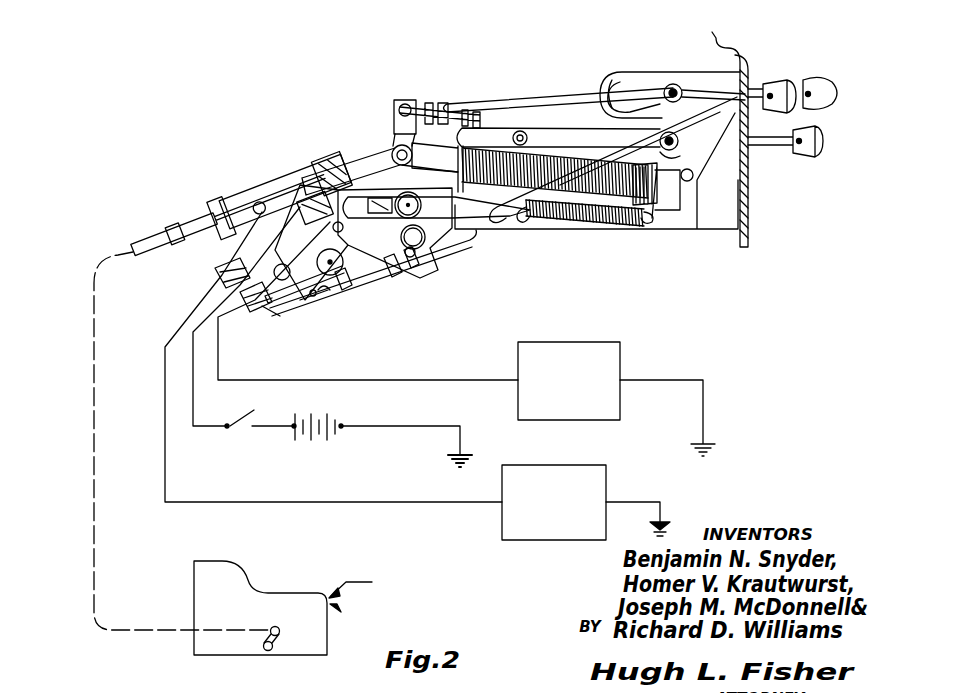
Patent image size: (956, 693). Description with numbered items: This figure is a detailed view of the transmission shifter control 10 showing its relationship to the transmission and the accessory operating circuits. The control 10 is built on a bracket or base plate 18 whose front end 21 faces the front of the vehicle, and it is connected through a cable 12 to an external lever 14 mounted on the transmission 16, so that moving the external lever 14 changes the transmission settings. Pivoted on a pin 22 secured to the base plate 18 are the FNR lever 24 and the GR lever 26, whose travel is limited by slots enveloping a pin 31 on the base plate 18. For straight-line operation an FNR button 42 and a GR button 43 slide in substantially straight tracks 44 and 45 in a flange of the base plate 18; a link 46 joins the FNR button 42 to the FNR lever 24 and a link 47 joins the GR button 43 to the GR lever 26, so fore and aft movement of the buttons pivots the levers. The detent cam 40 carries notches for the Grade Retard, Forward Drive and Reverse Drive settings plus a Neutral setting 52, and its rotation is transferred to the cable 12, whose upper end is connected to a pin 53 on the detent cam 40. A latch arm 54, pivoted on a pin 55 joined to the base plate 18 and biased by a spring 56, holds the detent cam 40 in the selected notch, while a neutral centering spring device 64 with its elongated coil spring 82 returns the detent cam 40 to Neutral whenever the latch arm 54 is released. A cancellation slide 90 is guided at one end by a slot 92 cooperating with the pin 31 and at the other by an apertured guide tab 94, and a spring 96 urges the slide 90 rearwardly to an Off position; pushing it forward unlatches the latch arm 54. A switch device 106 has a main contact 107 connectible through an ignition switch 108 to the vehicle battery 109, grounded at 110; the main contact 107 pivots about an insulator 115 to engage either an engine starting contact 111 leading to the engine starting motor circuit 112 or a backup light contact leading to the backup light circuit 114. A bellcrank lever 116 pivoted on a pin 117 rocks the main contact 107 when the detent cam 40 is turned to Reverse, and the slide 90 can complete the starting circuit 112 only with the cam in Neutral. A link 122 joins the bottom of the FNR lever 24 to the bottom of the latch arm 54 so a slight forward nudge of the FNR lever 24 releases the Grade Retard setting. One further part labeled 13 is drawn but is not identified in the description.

The transmission shifter control 10 is at (622, 68).
The cable 12 is at (140, 246).
The mounting plate 13 is at (312, 250).
The external lever 14 is at (282, 638).
The transmission 16 is at (333, 606).
The base plate 18 is at (700, 250).
The front end 21 is at (282, 192).
The pin 22 is at (418, 214).
The FNR lever 24 is at (396, 104).
The GR lever 26 is at (432, 104).
The pin 31 is at (428, 236).
The detent cam 40 is at (374, 272).
The FNR button 42 is at (820, 84).
The GR button 43 is at (824, 133).
The track 44 is at (664, 80).
The track 45 is at (685, 145).
The link 46 is at (546, 100).
The link 47 is at (512, 108).
The Neutral setting 52 is at (324, 170).
The pin 53 is at (398, 144).
The latch arm 54 is at (310, 308).
The pin 55 is at (344, 290).
The spring 56 is at (330, 300).
The neutral centering spring device 64 is at (662, 192).
The coil spring 82 is at (468, 165).
The cancellation slide 90 is at (472, 225).
The slot 92 is at (384, 196).
The apertured guide tab 94 is at (735, 57).
The spring 96 is at (596, 228).
The switch device 106 is at (220, 275).
The main contact 107 is at (234, 266).
The ignition switch 108 is at (260, 406).
The vehicle battery 109 is at (334, 410).
The ground 110 is at (466, 448).
The engine starting contact 111 is at (236, 202).
The engine starting motor circuit 112 is at (572, 465).
The backup light circuit 114 is at (584, 342).
The insulator 115 is at (232, 286).
The bellcrank lever 116 is at (304, 170).
The pin 117 is at (376, 164).
The link 122 is at (398, 272).